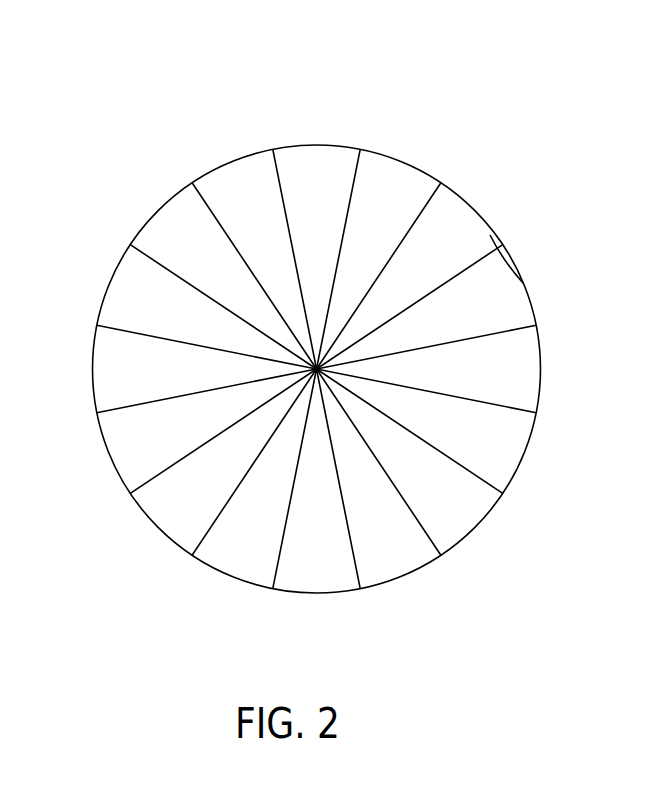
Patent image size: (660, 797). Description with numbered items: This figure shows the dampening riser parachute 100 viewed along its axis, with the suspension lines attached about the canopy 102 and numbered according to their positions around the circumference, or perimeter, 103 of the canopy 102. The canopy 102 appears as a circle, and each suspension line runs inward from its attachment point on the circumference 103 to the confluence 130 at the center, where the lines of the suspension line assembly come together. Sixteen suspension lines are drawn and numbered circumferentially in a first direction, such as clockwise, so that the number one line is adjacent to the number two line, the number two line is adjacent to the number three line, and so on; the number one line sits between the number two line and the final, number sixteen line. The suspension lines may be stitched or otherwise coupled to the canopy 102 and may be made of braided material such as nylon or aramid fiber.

The dampening riser parachute 100 is at (97, 112).
The canopy 102 is at (452, 230).
The circumference 103 is at (523, 283).
The confluence 130 is at (306, 358).